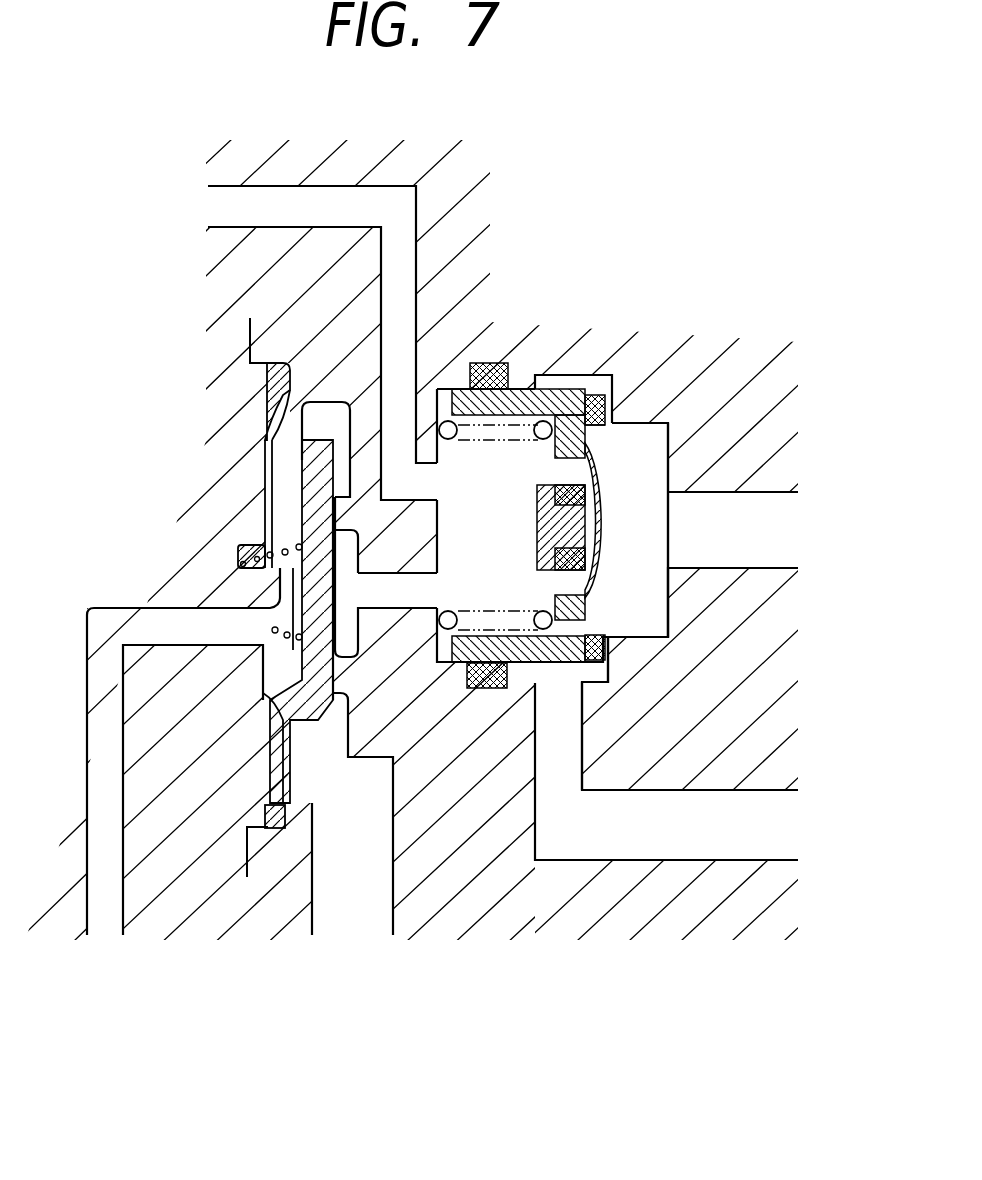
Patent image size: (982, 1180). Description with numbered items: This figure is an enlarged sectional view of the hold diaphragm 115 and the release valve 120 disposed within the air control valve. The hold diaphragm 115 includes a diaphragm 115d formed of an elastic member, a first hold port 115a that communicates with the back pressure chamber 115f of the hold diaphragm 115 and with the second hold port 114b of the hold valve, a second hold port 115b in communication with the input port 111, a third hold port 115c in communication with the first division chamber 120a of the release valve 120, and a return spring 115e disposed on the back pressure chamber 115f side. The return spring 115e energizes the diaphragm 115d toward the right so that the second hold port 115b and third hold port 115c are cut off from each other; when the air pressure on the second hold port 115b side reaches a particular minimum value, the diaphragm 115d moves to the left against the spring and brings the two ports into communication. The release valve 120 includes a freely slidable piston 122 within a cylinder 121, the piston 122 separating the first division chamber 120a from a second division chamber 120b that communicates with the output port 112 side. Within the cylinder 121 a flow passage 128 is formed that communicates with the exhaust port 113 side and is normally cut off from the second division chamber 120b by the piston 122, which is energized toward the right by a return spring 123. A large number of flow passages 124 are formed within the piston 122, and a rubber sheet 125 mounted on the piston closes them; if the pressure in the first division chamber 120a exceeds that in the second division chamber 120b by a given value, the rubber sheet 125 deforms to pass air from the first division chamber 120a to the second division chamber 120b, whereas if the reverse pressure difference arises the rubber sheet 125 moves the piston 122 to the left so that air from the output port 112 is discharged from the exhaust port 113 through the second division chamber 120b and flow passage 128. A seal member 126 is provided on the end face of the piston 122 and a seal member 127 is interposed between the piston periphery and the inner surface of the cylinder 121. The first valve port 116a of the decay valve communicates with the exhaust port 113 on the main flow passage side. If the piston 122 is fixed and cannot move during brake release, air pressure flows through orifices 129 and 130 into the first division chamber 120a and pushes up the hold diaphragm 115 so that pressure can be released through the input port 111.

The input port 111 is at (352, 908).
The output port 112 is at (730, 563).
The exhaust port 113 is at (687, 828).
The second hold port 114b is at (100, 905).
The hold diaphragm 115 is at (214, 358).
The first hold port 115a is at (172, 605).
The second hold port 115b is at (327, 758).
The third hold port 115c is at (388, 598).
The diaphragm 115d is at (272, 432).
The return spring 115e is at (277, 633).
The back pressure chamber 115f is at (280, 500).
The first valve port 116a is at (243, 207).
The release valve 120 is at (597, 345).
The first division chamber 120a is at (517, 612).
The second division chamber 120b is at (668, 433).
The cylinder 121 is at (533, 388).
The piston 122 is at (552, 452).
The return spring 123 is at (490, 435).
The flow passages 124 is at (565, 470).
The rubber sheet 125 is at (605, 518).
The seal member 126 is at (605, 395).
The seal member 127 is at (487, 362).
The flow passage 128 is at (570, 712).
The orifice 129 is at (585, 432).
The orifice 130 is at (585, 622).